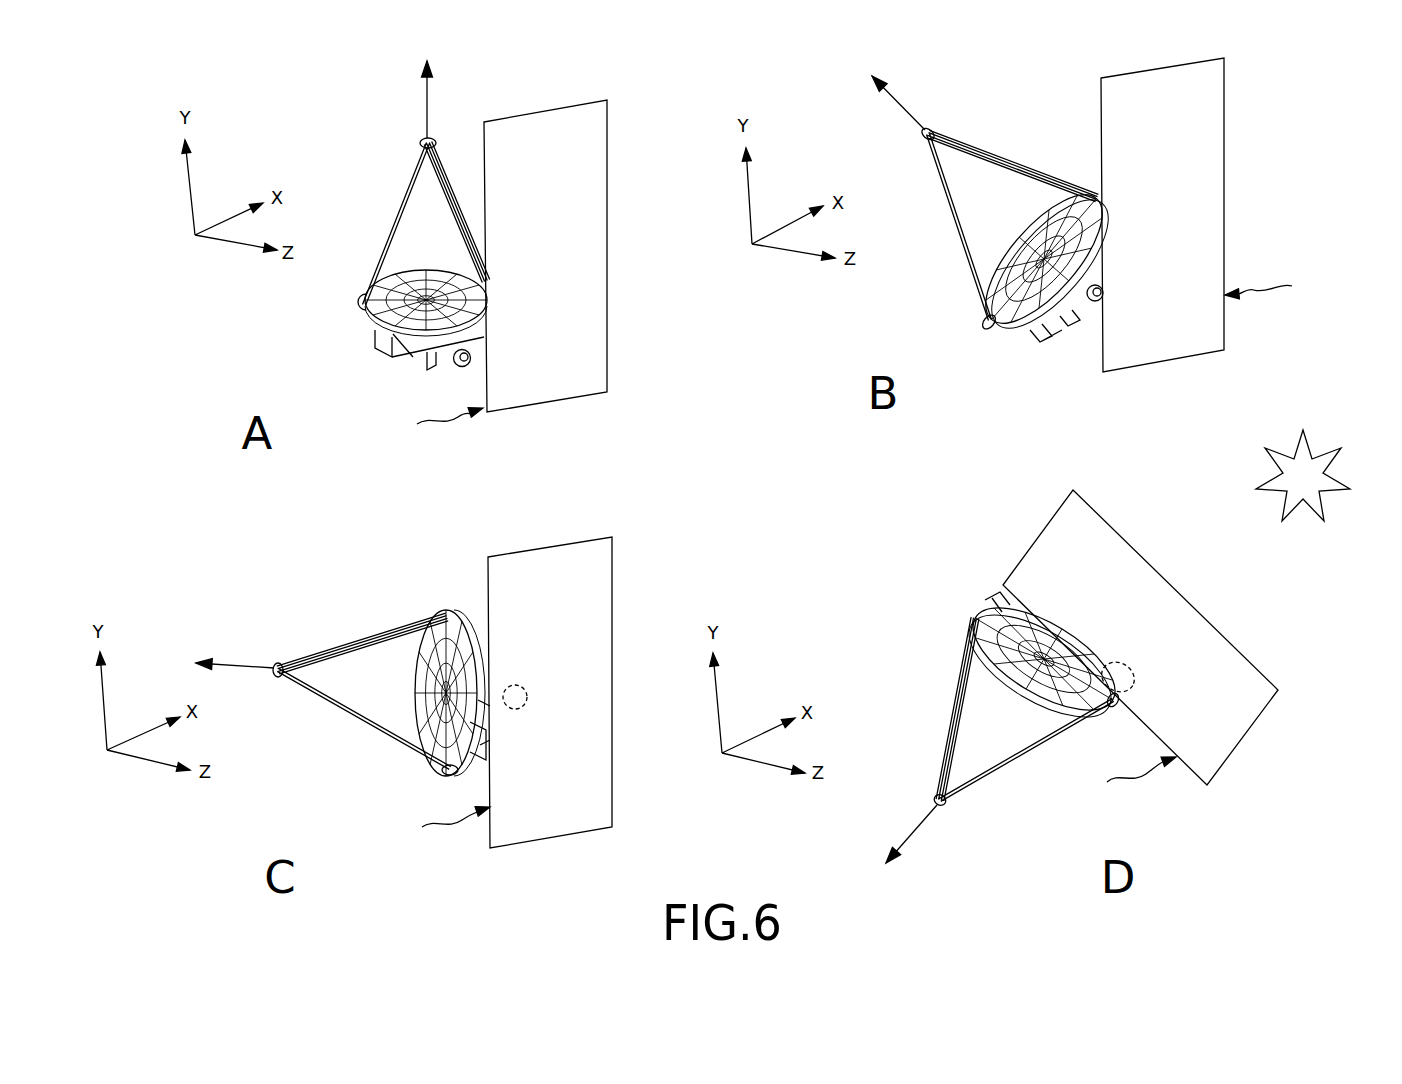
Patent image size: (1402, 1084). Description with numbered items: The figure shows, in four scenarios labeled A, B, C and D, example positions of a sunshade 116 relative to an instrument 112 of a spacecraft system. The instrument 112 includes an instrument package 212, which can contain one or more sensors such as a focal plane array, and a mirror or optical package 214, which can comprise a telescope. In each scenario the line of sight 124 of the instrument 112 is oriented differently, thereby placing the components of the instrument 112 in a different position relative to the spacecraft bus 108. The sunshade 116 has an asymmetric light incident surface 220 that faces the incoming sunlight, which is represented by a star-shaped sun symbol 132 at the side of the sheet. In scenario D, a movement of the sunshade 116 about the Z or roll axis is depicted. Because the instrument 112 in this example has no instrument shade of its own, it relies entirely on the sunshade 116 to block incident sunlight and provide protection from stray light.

The spacecraft bus 108 is at (462, 367).
The instrument 112 is at (356, 303).
The sunshade 116 is at (853, 549).
The line of sight 124 is at (426, 104).
The sun 132 is at (1315, 455).
The instrument package 212 is at (408, 354).
The optical package 214 is at (418, 268).
The light incident surface 220 is at (598, 187).